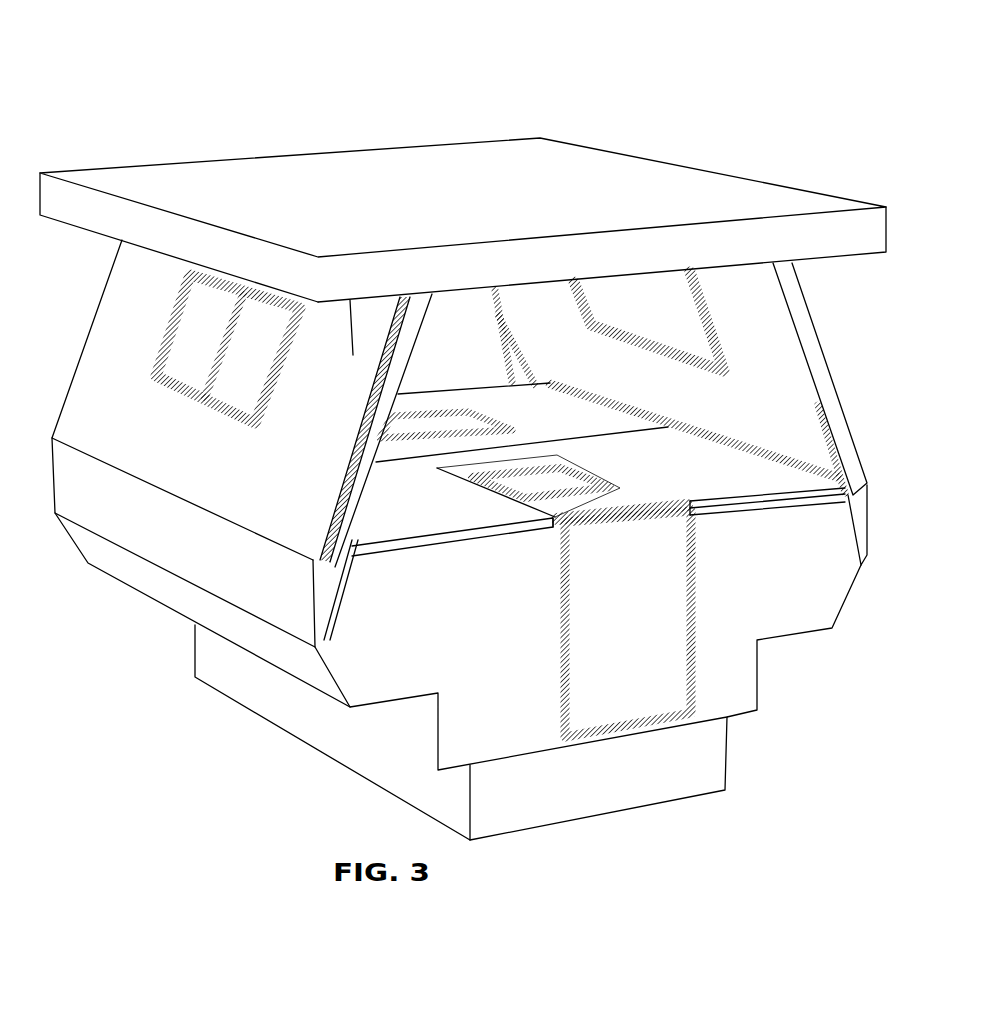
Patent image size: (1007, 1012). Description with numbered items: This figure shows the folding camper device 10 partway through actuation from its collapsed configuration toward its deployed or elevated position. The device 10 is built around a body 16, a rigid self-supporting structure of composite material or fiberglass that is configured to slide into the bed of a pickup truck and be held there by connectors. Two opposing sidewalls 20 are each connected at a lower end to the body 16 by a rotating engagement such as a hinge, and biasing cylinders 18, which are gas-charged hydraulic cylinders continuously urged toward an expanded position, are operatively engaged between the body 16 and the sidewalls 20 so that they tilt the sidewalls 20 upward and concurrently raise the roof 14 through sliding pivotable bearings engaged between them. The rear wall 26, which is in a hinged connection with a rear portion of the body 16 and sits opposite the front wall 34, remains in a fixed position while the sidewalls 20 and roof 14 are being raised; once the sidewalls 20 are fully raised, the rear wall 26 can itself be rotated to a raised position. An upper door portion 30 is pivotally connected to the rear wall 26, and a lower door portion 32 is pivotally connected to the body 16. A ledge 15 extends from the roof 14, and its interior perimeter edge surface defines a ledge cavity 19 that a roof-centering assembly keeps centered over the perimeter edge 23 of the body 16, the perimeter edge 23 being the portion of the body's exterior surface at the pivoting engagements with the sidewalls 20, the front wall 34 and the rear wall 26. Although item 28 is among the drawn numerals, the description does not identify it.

The folding camper device 10 is at (284, 108).
The roof 14 is at (618, 182).
The ledge 15 is at (78, 202).
The ledge cavity 19 is at (353, 355).
The sidewalls 20 is at (137, 358).
The perimeter edge 23 is at (78, 487).
The front wall 34 is at (535, 418).
The rear wall 26 is at (723, 460).
The cylinders 18 is at (350, 555).
The front rail 28 is at (437, 547).
The upper door portion 30 is at (563, 503).
The lower door portion 32 is at (653, 637).
The body 16 is at (773, 613).